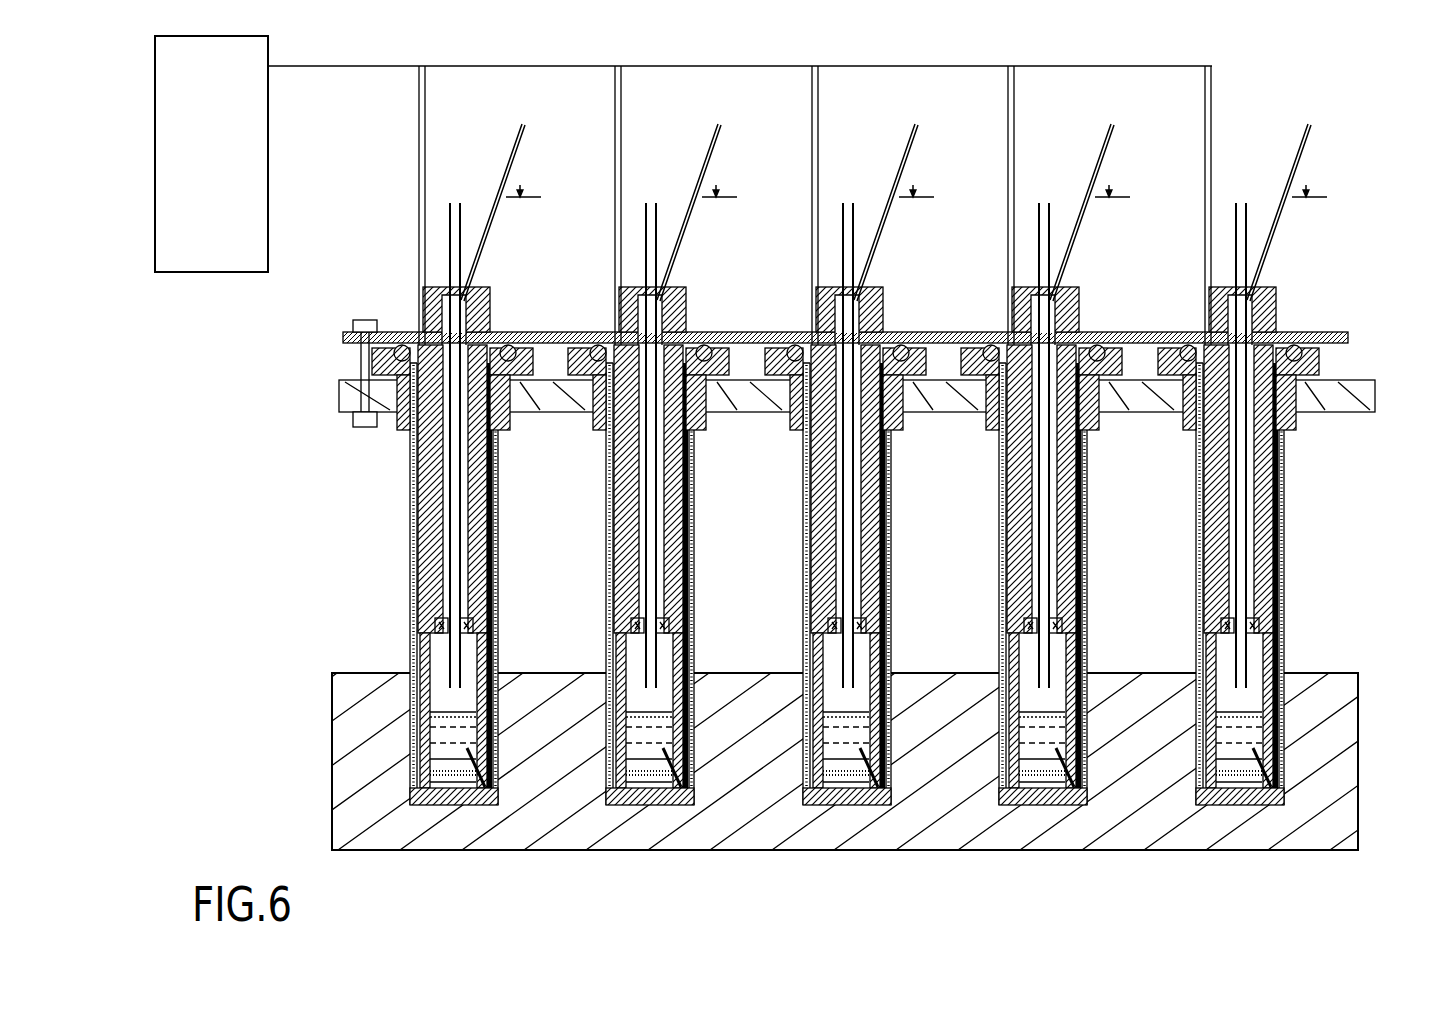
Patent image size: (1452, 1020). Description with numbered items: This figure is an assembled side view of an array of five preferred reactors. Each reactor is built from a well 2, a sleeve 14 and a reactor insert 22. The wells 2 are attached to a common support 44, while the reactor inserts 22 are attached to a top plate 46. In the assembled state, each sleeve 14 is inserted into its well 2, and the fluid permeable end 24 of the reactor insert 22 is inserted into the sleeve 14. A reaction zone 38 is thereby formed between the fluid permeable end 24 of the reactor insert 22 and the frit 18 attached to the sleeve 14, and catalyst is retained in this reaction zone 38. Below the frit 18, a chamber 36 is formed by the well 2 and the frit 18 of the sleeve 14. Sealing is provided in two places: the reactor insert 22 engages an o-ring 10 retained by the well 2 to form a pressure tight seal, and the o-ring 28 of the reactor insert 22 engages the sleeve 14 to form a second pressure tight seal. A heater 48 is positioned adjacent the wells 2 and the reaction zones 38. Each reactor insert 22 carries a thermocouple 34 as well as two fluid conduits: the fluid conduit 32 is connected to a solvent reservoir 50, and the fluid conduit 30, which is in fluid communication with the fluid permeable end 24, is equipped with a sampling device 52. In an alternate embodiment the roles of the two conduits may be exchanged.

The well 2 is at (868, 584).
The o-ring 10 is at (880, 403).
The sleeve 14 is at (915, 584).
The frit 18 is at (847, 810).
The reactor insert 22 is at (877, 566).
The fluid permeable end 24 is at (889, 643).
The o-ring 28 is at (845, 409).
The fluid conduit 30 is at (871, 301).
The fluid conduit 32 is at (792, 205).
The thermocouple 34 is at (858, 410).
The chamber 36 is at (831, 848).
The reaction zone 38 is at (894, 828).
The support 44 is at (1375, 395).
The top plate 46 is at (1336, 332).
The heater 48 is at (1340, 738).
The solvent reservoir 50 is at (162, 273).
The sampling device 52 is at (912, 212).